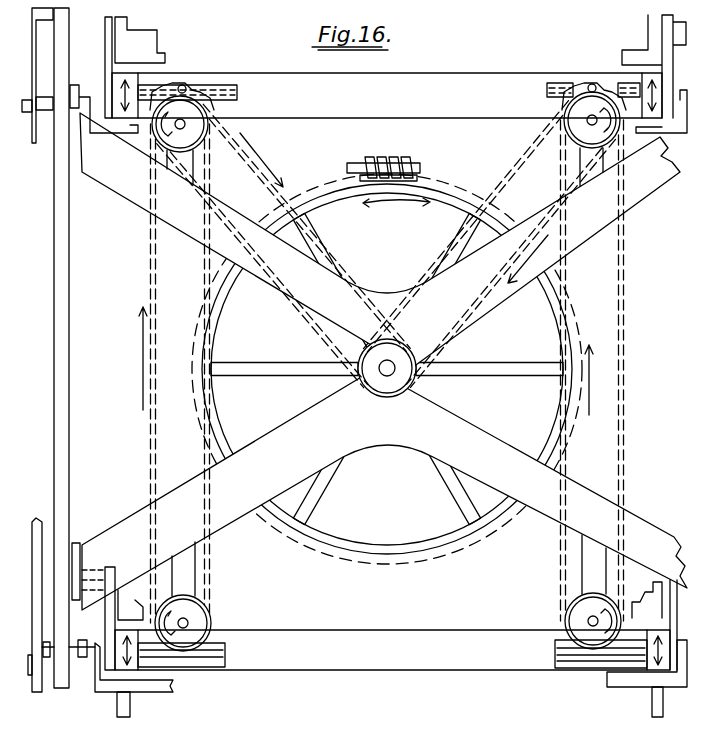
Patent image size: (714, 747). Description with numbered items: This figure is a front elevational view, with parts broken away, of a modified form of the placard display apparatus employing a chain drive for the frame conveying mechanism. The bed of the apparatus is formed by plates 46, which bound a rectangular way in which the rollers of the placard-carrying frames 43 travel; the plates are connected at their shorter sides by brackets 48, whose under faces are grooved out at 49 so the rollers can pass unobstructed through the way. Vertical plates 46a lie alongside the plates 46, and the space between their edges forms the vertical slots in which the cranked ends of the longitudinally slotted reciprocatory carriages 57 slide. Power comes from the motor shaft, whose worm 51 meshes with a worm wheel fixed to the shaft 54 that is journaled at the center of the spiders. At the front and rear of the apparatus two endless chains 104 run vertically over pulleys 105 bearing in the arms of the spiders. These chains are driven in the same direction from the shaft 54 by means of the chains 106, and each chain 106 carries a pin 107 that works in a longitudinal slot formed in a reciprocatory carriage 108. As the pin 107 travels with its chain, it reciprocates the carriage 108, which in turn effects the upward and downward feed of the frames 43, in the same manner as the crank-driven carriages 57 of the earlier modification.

The frame 43 is at (613, 690).
The plate 46 is at (82, 348).
The vertical plate 46a is at (70, 345).
The bracket 48 is at (158, 690).
The groove 49 is at (50, 112).
The worm 51 is at (392, 160).
The shaft 54 is at (385, 372).
The reciprocatory carriage 57 is at (383, 80).
The endless chain 104 is at (150, 425).
The pulley 105 is at (195, 135).
The chain 106 is at (297, 310).
The pin 107 is at (185, 86).
The reciprocatory carriage 108 is at (226, 83).